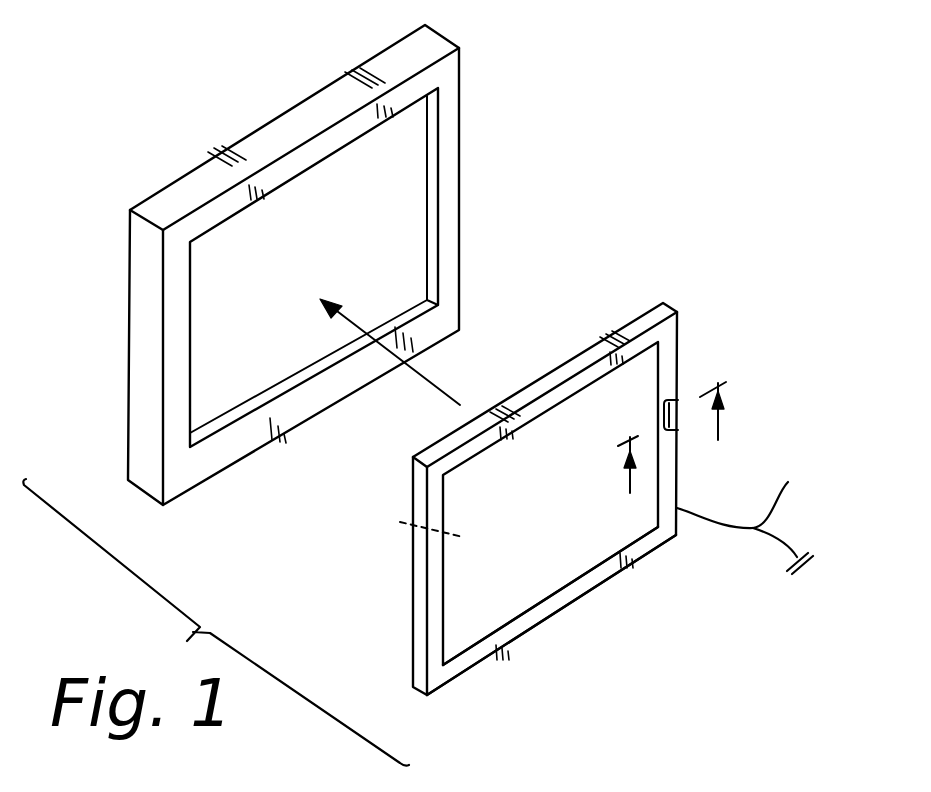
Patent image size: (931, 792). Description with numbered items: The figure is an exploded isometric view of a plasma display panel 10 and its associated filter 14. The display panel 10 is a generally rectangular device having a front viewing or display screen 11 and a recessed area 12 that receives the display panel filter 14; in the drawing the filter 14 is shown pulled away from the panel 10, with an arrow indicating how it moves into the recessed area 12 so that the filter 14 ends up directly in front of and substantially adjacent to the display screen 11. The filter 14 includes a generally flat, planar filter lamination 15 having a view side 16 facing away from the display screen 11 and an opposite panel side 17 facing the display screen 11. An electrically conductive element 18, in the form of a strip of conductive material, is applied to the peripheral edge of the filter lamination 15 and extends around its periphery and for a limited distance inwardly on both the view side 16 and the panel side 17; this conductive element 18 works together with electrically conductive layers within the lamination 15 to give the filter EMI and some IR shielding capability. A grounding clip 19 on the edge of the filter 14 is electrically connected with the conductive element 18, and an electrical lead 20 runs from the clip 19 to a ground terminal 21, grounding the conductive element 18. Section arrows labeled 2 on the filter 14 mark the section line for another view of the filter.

The plasma display panel 10 is at (443, 72).
The display screen 11 is at (395, 192).
The recessed area 12 is at (418, 269).
The filter 14 is at (690, 319).
The filter lamination 15 is at (548, 568).
The view side 16 is at (569, 514).
The panel side 17 is at (408, 520).
The electrically conductive element 18 is at (507, 642).
The grounding clip 19 is at (677, 406).
The electrical lead 20 is at (754, 495).
The ground terminal 21 is at (803, 573).
The section line 2- 2 is at (675, 456).